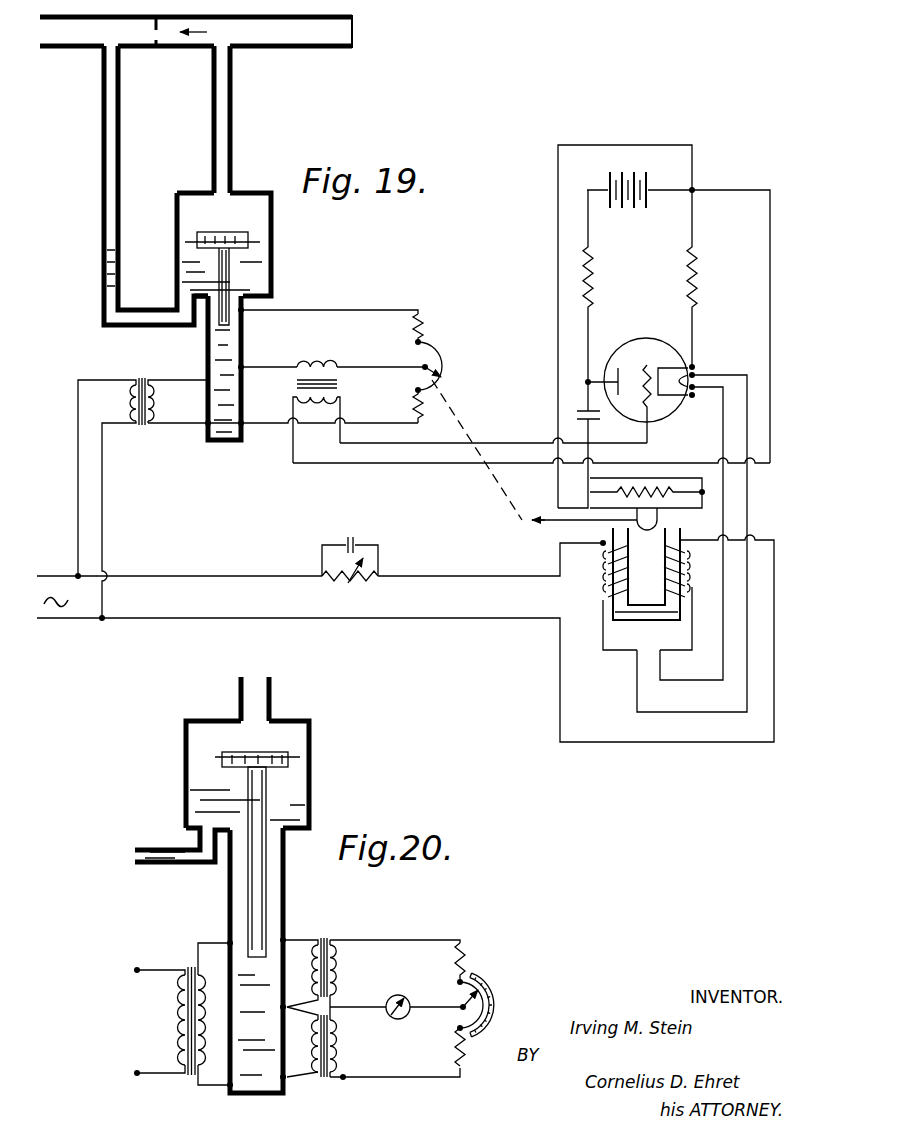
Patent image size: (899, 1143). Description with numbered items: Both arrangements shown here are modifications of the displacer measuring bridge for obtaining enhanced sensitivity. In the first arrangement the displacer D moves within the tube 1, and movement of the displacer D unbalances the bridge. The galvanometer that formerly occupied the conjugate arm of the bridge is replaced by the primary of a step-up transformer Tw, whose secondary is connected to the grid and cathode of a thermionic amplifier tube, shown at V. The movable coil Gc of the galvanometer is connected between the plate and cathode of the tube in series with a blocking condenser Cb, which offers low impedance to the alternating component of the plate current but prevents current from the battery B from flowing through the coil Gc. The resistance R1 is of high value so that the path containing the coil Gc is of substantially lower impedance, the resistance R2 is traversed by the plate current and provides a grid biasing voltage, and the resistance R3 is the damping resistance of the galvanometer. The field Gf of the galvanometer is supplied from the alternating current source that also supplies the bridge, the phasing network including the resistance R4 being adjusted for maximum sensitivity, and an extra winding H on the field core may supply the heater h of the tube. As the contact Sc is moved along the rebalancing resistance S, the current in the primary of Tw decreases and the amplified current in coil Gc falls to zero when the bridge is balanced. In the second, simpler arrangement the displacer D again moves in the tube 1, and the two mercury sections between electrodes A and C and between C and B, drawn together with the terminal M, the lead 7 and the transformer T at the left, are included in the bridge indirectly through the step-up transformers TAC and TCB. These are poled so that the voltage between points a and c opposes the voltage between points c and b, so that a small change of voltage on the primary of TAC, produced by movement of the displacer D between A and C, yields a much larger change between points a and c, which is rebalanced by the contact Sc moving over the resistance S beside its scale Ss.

In FIG. 19, the displacer D is at (237, 275).
In FIG. 20, the displacer D is at (252, 880).
In FIG. 19, the tube 1 is at (246, 404).
In FIG. 20, the tube 1 is at (287, 878).
In FIG. 19, the mercury section terminal A is at (244, 311).
In FIG. 20, the mercury section terminal A is at (287, 938).
In FIG. 19, the intermediate mercury section terminal C is at (244, 368).
In FIG. 20, the intermediate mercury section terminal C is at (286, 1010).
In FIG. 19, the battery B is at (245, 426).
In FIG. 20, the battery B is at (287, 1080).
In FIG. 19, the transformer Tw is at (339, 384).
In FIG. 19, the resistance arc S is at (441, 348).
In FIG. 20, the resistance arc S is at (460, 1022).
In FIG. 19, the contact Sc is at (452, 372).
In FIG. 20, the contact Sc is at (470, 995).
In FIG. 19, the blocking condenser Cb is at (576, 413).
In FIG. 19, the resistance R1 is at (592, 281).
In FIG. 19, the resistance R2 is at (697, 281).
In FIG. 19, the damping resistance R3 is at (648, 490).
In FIG. 19, the phasing network resistance R4 is at (352, 583).
In FIG. 19, the vacuum tube V is at (640, 338).
In FIG. 19, the heater h is at (696, 375).
In FIG. 19, the movable coil Gc is at (660, 523).
In FIG. 19, the galvanometer field Gf is at (683, 581).
In FIG. 19, the extra winding H is at (650, 607).
In FIG. 20, the transformer T is at (190, 962).
In FIG. 20, the lead 7 is at (208, 1083).
In FIG. 20, the electrode M is at (255, 1088).
In FIG. 20, the transformer TAC is at (333, 926).
In FIG. 20, the transformer TCB is at (331, 1084).
In FIG. 20, the bridge point a is at (347, 941).
In FIG. 20, the bridge point c is at (347, 1009).
In FIG. 20, the bridge point b is at (347, 1075).
In FIG. 20, the scale Ss is at (497, 985).